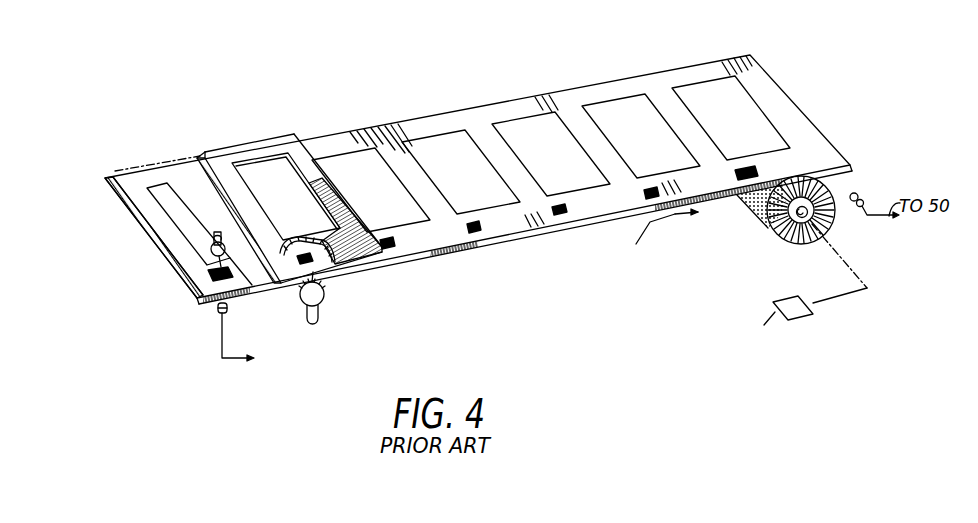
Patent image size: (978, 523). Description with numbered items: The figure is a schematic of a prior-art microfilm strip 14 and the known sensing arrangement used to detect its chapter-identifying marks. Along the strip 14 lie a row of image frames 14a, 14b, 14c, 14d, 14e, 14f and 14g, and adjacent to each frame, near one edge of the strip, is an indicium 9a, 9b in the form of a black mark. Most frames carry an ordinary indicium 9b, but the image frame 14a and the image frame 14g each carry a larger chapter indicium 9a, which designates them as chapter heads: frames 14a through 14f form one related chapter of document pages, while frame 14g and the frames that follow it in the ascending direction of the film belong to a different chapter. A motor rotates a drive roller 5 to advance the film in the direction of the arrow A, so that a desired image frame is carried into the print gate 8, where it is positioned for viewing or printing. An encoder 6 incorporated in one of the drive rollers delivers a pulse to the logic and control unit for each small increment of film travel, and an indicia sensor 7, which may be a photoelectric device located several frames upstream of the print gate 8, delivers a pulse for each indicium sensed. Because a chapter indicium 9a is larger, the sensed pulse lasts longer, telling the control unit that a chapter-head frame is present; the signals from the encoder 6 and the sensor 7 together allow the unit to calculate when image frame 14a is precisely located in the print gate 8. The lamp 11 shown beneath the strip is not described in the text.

The microfilm strip 14 is at (107, 180).
The image frame 14a is at (698, 92).
The image frame 14b is at (597, 110).
The image frame 14c is at (508, 130).
The image frame 14d is at (427, 147).
The image frame 14e is at (342, 158).
The image frame 14f is at (255, 177).
The image frame 14g is at (157, 192).
The print gate 8 is at (282, 138).
The chapter indicium 9a is at (742, 178).
The indicium 9b is at (311, 257).
The indicia sensor 7 is at (233, 304).
The lamp 11 is at (304, 317).
The drive roller 5 is at (775, 238).
The encoder 6 is at (823, 218).
The arrow A is at (666, 236).